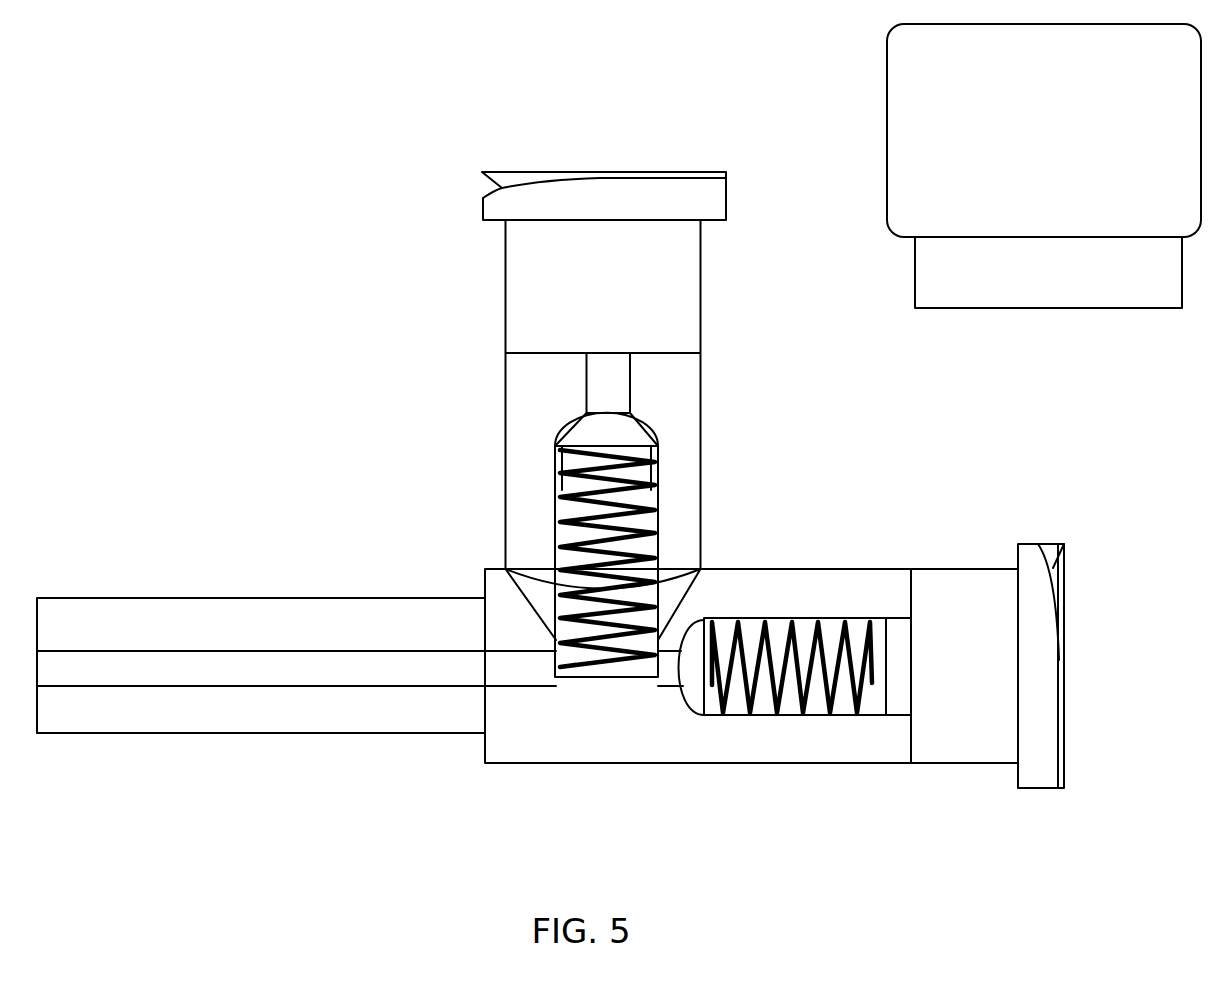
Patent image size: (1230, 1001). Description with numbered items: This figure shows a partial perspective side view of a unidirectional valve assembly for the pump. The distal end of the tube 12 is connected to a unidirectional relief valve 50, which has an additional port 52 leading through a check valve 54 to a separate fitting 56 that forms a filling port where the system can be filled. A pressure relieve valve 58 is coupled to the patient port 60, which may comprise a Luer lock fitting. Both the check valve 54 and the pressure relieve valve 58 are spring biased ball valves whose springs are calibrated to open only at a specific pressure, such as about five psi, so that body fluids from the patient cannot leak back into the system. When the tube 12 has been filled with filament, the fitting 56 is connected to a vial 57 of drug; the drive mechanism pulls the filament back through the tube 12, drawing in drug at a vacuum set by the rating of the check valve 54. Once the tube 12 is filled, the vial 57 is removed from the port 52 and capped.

The tube 12 is at (418, 733).
The unidirectional relief valve 50 is at (430, 443).
The port 52 is at (676, 277).
The check valve 54 is at (630, 437).
The fitting 56 is at (477, 208).
The vial 57 is at (1088, 310).
The pressure relieve valve 58 is at (705, 705).
The patient port 60 is at (1064, 659).